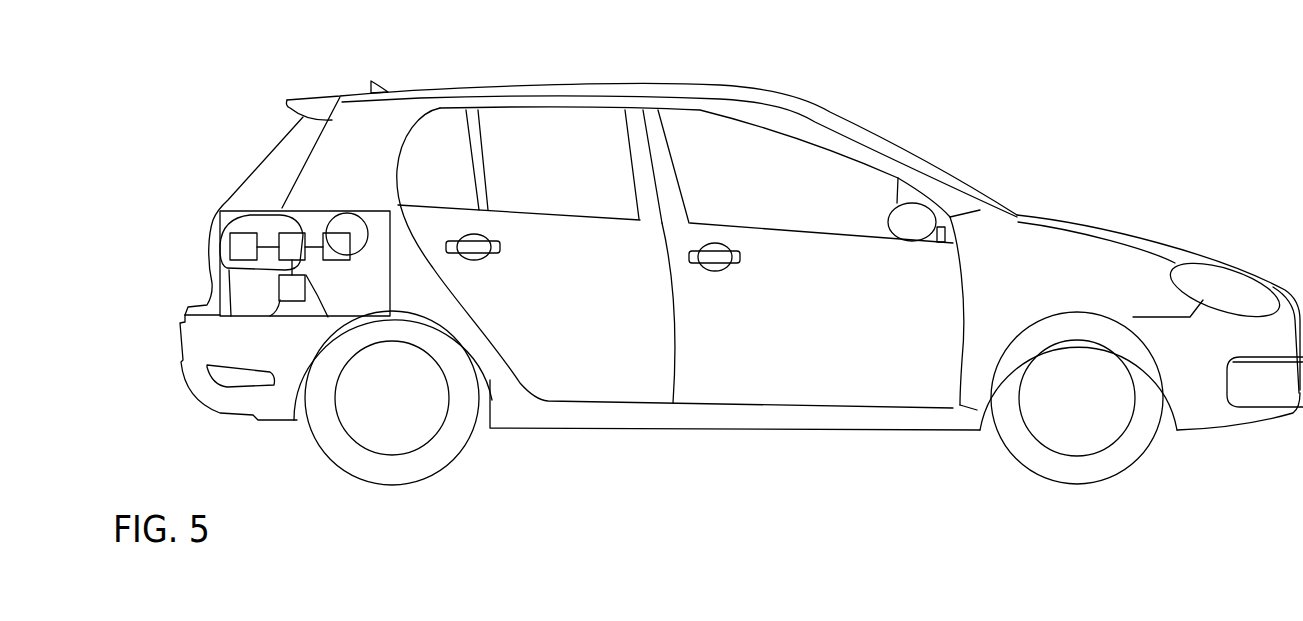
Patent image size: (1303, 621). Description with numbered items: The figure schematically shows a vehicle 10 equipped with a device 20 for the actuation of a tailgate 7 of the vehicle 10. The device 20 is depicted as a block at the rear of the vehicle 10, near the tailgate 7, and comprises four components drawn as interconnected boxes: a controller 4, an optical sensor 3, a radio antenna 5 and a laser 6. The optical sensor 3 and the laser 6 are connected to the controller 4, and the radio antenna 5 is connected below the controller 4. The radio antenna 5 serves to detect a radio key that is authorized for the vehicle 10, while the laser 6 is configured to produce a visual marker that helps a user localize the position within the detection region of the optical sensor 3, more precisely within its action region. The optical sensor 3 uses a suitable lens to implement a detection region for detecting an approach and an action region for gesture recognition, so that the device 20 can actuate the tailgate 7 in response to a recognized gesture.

The vehicle 10 is at (960, 80).
The tailgate 7 is at (270, 146).
The device 20 is at (237, 209).
The optical sensor 3 is at (243, 246).
The controller 4 is at (292, 246).
The radio antenna 5 is at (292, 288).
The laser 6 is at (336, 246).